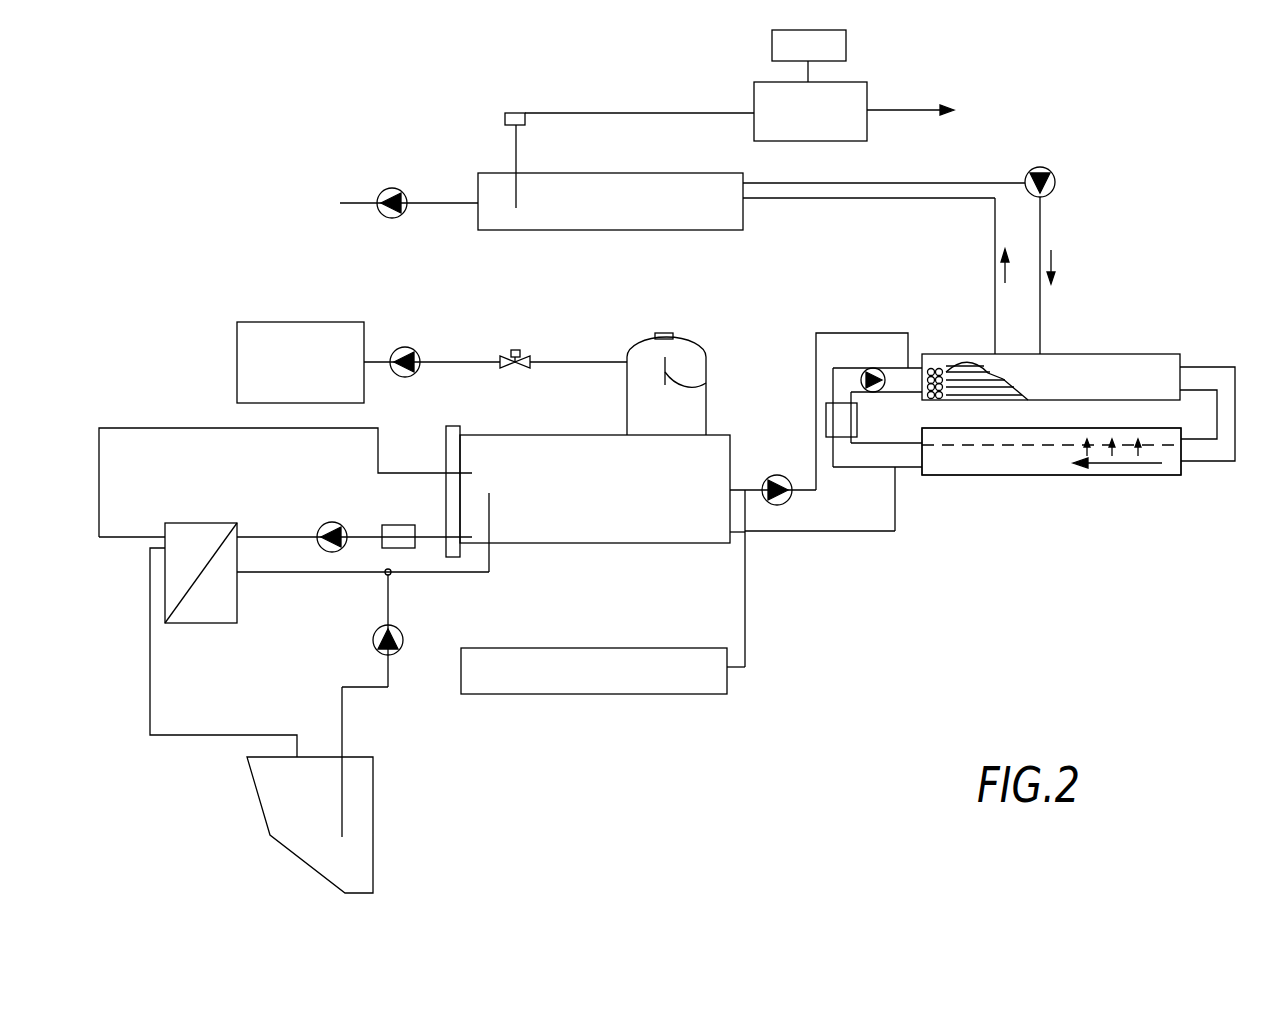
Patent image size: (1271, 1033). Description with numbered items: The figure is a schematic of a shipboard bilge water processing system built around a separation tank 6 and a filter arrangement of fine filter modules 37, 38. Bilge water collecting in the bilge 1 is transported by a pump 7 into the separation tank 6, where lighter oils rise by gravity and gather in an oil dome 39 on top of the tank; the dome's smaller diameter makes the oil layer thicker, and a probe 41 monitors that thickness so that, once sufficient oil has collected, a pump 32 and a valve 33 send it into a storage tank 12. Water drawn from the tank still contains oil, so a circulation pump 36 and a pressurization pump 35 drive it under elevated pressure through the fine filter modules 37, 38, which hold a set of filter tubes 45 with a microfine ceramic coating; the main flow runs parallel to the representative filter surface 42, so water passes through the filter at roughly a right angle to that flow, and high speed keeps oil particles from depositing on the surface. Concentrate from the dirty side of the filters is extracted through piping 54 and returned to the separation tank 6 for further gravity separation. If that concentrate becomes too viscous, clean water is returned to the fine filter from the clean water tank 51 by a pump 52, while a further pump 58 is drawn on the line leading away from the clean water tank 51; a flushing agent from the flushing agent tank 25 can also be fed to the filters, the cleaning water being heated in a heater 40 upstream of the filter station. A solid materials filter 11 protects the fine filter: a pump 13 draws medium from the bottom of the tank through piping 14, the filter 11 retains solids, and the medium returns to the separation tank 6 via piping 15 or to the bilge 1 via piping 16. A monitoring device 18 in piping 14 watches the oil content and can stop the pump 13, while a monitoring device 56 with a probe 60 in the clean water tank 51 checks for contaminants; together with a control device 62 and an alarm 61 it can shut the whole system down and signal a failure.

The bilge 1 is at (310, 825).
The separation tank 6 is at (588, 499).
The pump 7 is at (373, 644).
The solid materials filter 11 is at (198, 523).
The storage tank 12 is at (300, 362).
The pump 13 is at (332, 522).
The piping 14 is at (266, 537).
The piping 15 is at (143, 428).
The piping 16 is at (150, 646).
The monitoring device 18 is at (397, 525).
The flushing agent tank 25 is at (585, 694).
The pump 32 is at (413, 351).
The valve 33 is at (530, 340).
The pressurization pump 35 is at (776, 475).
The circulation pump 36 is at (873, 368).
The fine filter module 37 is at (1040, 475).
The fine filter module 38 is at (1051, 451).
The oil dome 39 is at (686, 349).
The heater 40 is at (826, 420).
The probe 41 is at (706, 383).
The filter surface 42 is at (970, 447).
The filter tubes 45 is at (967, 376).
The clean water tank 51 is at (655, 173).
The pump 52 is at (1055, 182).
The piping 54 is at (855, 532).
The monitoring device 56 is at (516, 112).
The discharge pump 58 is at (392, 188).
The probe 60 is at (515, 150).
The alarm 61 is at (846, 45).
The control device 62 is at (867, 90).